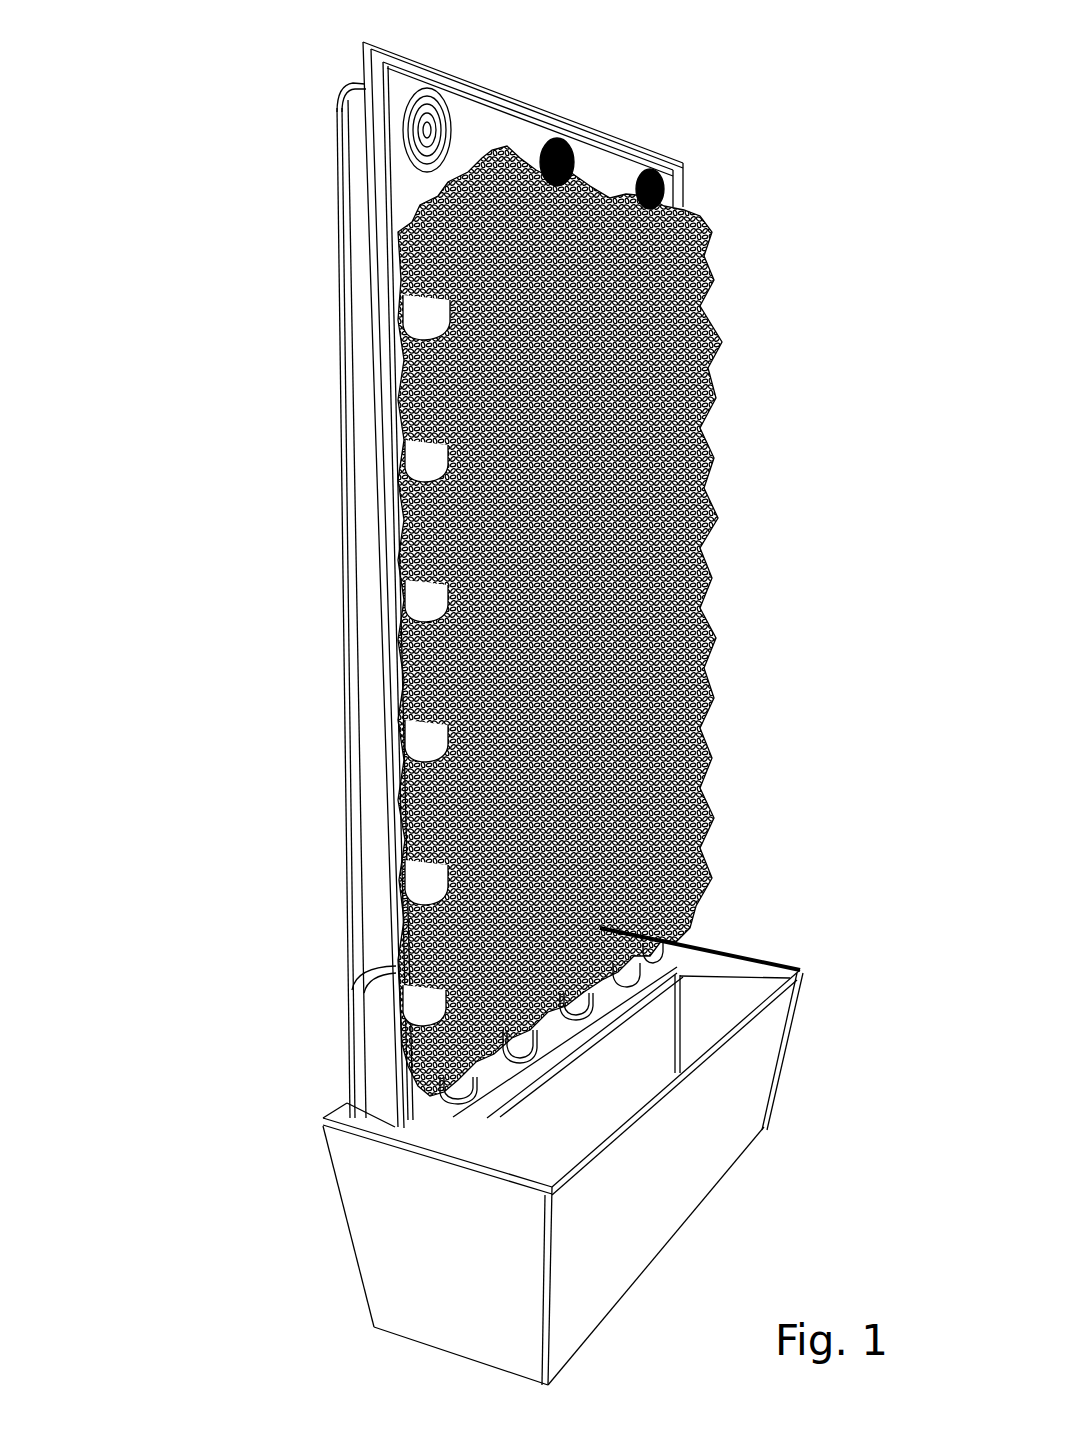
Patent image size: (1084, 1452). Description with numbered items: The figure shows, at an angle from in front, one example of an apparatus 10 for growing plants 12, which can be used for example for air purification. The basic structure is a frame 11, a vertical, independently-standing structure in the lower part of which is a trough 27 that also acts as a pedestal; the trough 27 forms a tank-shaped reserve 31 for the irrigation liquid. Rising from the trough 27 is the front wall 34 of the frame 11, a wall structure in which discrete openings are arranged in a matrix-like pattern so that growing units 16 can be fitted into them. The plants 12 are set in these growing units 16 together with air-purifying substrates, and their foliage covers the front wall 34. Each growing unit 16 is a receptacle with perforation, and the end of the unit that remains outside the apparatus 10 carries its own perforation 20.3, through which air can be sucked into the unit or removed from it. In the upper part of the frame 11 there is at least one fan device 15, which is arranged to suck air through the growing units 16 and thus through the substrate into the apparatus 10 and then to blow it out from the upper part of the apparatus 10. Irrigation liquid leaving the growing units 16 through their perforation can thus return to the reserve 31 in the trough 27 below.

The apparatus 10 is at (316, 89).
The frame 11 is at (345, 418).
The plants 12 is at (356, 807).
The fan device 15 is at (432, 95).
The growing unit 16 is at (422, 320).
The perforation 20.3 is at (400, 625).
The trough 27 is at (698, 1140).
The tank-shaped reserve 31 is at (726, 975).
The front wall 34 is at (402, 218).